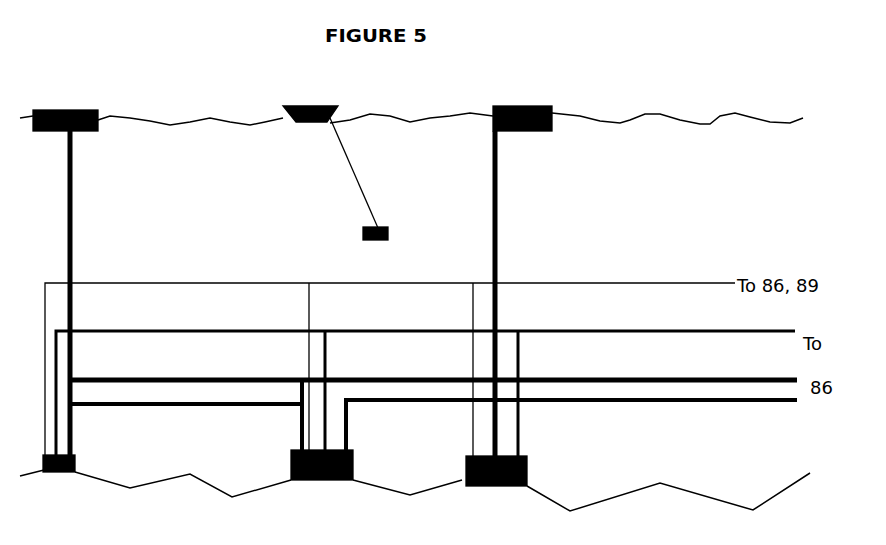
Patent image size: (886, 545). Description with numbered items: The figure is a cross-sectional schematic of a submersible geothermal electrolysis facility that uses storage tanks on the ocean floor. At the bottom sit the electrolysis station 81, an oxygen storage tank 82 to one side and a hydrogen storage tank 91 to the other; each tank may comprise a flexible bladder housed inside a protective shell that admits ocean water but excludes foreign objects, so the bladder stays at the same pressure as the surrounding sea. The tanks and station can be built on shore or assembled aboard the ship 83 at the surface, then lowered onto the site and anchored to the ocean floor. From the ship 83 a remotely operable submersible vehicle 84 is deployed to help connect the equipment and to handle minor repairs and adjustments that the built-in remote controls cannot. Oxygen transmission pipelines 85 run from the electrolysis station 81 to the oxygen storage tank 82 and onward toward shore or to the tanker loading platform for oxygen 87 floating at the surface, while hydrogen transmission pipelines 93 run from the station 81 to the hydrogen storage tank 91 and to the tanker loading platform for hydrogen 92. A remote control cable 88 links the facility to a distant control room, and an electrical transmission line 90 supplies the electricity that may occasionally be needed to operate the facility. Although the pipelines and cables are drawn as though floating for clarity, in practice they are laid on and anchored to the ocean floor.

The electrolysis station 81 is at (322, 481).
The oxygen storage tank 82 is at (59, 480).
The ship 83 is at (310, 102).
The remotely operable submersible vehicle 84 is at (373, 182).
The oxygen transmission pipeline 85 is at (432, 293).
The tanker loading platform for oxygen 87 is at (65, 108).
The remote control cable 88 is at (390, 353).
The electrical transmission line 90 is at (165, 325).
The hydrogen storage tank 91 is at (496, 486).
The tanker loading platform for hydrogen 92 is at (522, 104).
The hydrogen transmission pipeline 93 is at (570, 293).